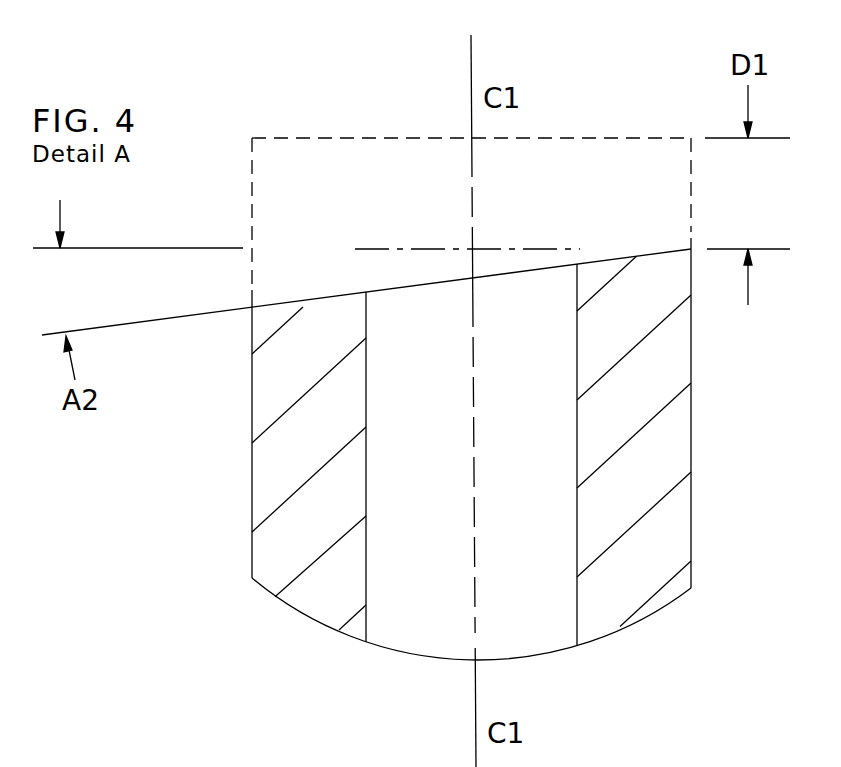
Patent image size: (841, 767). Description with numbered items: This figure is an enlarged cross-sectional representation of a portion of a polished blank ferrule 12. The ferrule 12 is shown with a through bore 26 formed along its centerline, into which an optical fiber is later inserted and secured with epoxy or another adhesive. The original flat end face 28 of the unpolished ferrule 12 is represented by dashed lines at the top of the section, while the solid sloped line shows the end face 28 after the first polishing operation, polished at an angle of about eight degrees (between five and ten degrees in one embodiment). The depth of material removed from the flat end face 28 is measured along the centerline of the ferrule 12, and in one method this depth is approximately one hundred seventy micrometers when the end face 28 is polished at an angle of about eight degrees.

The ferrule 12 is at (210, 585).
The through bore 26 is at (366, 590).
The end face 28 is at (346, 137).